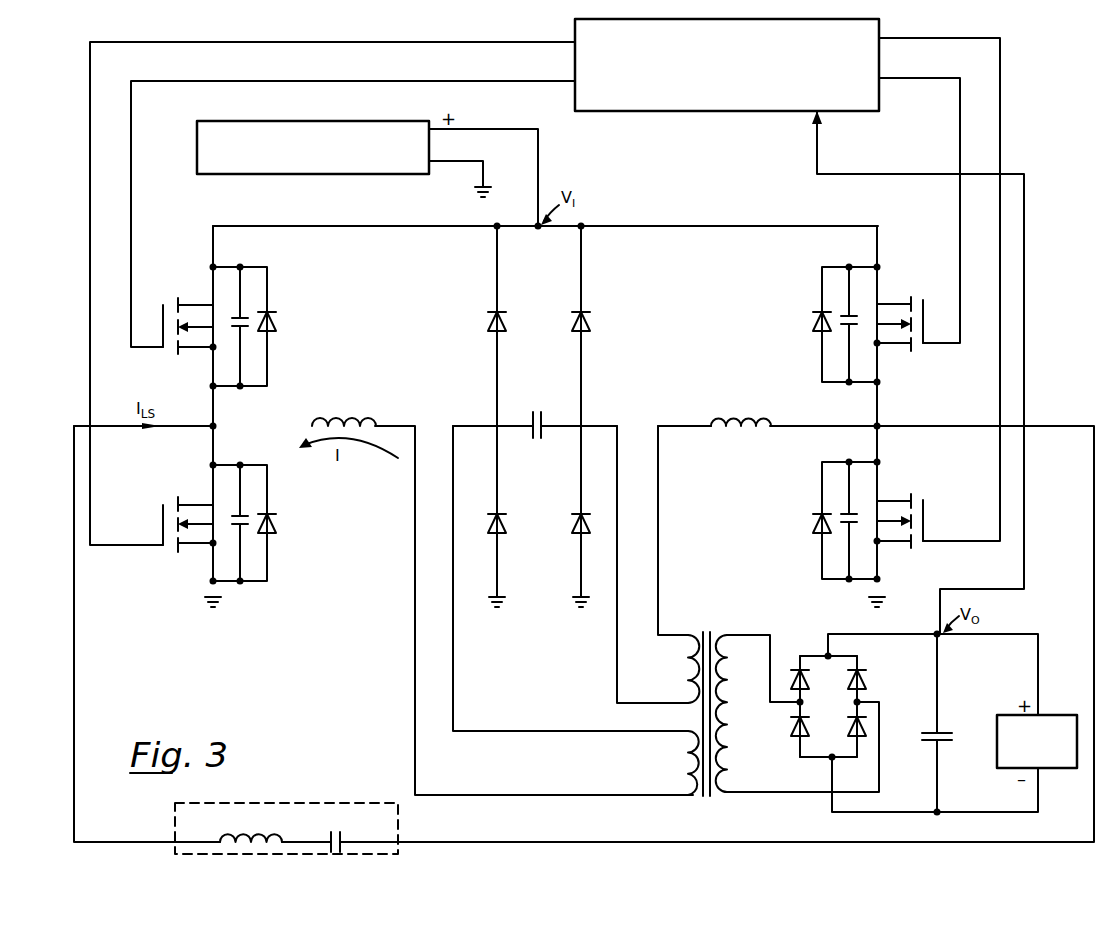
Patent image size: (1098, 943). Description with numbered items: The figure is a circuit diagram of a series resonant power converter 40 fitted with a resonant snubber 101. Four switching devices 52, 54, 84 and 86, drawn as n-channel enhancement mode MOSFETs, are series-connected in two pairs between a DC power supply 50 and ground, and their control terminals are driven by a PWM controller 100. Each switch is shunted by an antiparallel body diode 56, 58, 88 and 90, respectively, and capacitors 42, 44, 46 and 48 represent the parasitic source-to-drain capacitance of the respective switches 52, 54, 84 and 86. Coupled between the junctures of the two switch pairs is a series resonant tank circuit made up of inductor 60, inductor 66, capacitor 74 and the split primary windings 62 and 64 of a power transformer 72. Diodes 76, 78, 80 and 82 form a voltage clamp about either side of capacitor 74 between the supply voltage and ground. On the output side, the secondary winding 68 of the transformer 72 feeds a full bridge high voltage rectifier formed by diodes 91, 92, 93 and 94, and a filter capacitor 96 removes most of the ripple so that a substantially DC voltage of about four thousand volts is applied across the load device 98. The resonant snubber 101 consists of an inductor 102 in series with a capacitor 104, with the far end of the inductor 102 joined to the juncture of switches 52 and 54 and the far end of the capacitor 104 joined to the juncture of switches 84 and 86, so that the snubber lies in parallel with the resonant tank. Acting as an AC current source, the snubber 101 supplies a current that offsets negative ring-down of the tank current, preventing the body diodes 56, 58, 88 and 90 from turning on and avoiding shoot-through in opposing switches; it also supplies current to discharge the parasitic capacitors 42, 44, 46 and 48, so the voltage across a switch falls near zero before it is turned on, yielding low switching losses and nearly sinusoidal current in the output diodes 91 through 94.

The power converter 40 is at (1047, 163).
The parasitic capacitor 42 is at (244, 316).
The parasitic capacitor 44 is at (244, 514).
The parasitic capacitor 46 is at (854, 314).
The parasitic capacitor 48 is at (854, 512).
The DC power supply 50 is at (278, 121).
The switching device 52 is at (196, 300).
The switching device 54 is at (196, 500).
The antiparallel diode 56 is at (276, 322).
The antiparallel diode 58 is at (276, 521).
The inductor 60 is at (335, 418).
The split primary winding 62 is at (686, 748).
The split primary winding 64 is at (686, 660).
The inductor 66 is at (733, 418).
The secondary winding 68 is at (730, 670).
The power transformer 72 is at (705, 737).
The capacitor 74 is at (536, 406).
The diode 76 is at (488, 321).
The diode 78 is at (506, 522).
The diode 80 is at (590, 321).
The diode 82 is at (572, 526).
The switching device 84 is at (897, 347).
The switching device 86 is at (897, 546).
The antiparallel diode 88 is at (812, 320).
The antiparallel diode 90 is at (812, 520).
The rectifier diode 91 is at (793, 679).
The rectifier diode 92 is at (791, 727).
The rectifier diode 93 is at (866, 679).
The rectifier diode 94 is at (849, 727).
The filter capacitor 96 is at (921, 738).
The load device 98 is at (995, 731).
The PWM controller 100 is at (729, 113).
The resonant snubber 101 is at (265, 828).
The inductor 102 is at (230, 840).
The capacitor 104 is at (343, 836).